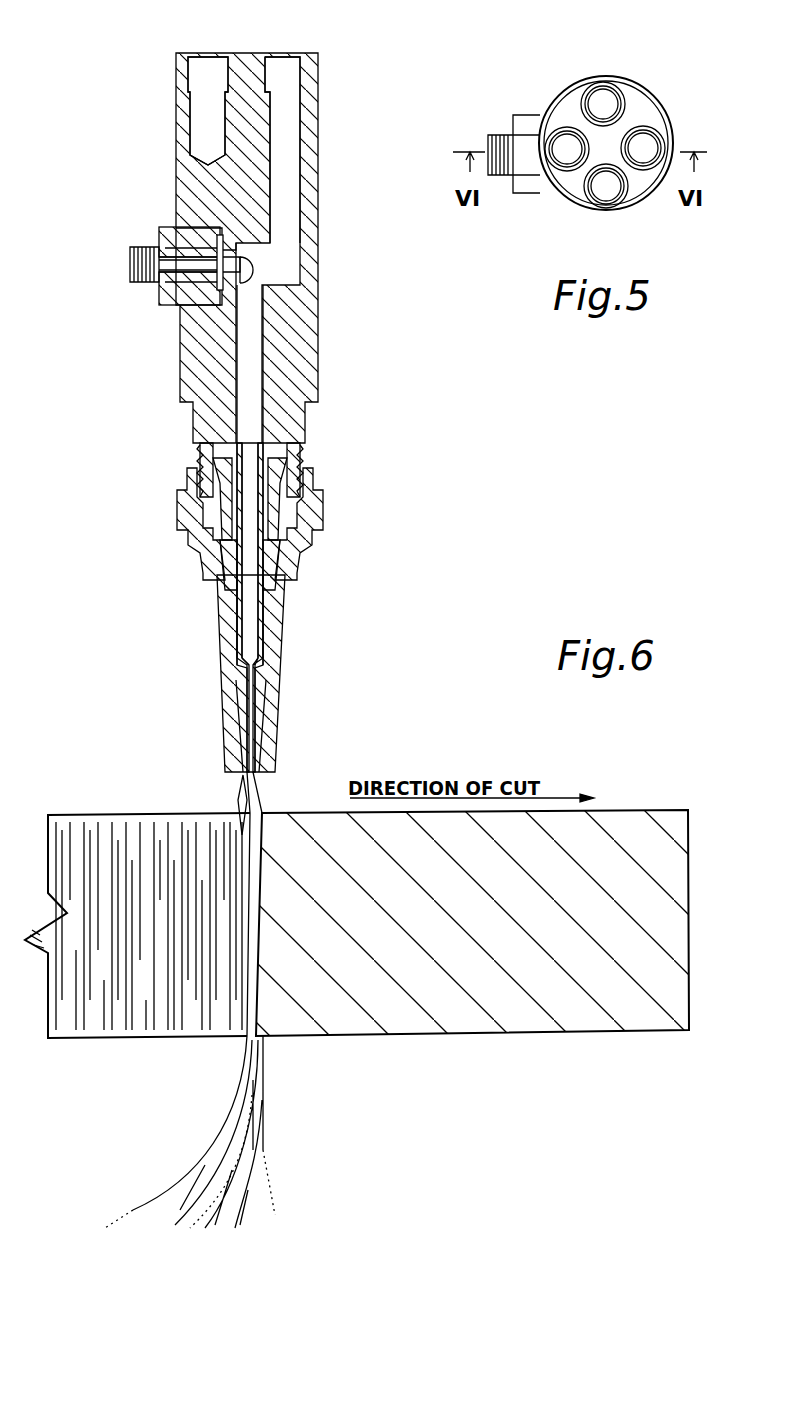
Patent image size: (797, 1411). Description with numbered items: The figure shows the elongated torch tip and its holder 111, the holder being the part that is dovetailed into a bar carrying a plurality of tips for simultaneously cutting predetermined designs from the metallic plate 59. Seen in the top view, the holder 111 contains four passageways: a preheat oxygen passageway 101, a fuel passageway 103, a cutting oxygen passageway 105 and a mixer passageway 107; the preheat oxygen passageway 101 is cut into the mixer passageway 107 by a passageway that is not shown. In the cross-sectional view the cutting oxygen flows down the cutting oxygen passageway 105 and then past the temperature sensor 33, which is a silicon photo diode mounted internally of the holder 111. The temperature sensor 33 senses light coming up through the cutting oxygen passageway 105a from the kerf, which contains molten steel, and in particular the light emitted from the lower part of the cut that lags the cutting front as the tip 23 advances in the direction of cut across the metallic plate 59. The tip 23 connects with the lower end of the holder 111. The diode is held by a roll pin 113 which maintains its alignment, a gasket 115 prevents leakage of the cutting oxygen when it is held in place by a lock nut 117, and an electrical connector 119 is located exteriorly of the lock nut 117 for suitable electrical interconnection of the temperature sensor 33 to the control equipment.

In FIG. 6, the preheat oxygen passageway 101 is at (204, 70).
In FIG. 5, the preheat oxygen passageway 101 is at (565, 137).
In FIG. 5, the fuel passageway 103 is at (598, 102).
In FIG. 6, the cutting oxygen passageway 105 is at (284, 63).
In FIG. 5, the cutting oxygen passageway 105 is at (640, 145).
In FIG. 6, the cutting oxygen passageway 105a is at (250, 428).
In FIG. 5, the mixer passageway 107 is at (607, 192).
In FIG. 6, the holder 111 is at (318, 150).
In FIG. 5, the holder 111 is at (650, 87).
In FIG. 6, the roll pin 113 is at (222, 292).
In FIG. 6, the gasket 115 is at (205, 268).
In FIG. 6, the lock nut 117 is at (160, 298).
In FIG. 6, the electrical connector 119 is at (130, 262).
In FIG. 6, the temperature sensor 33 is at (252, 272).
In FIG. 6, the tip 23 is at (217, 603).
In FIG. 6, the metallic plate 59 is at (100, 815).